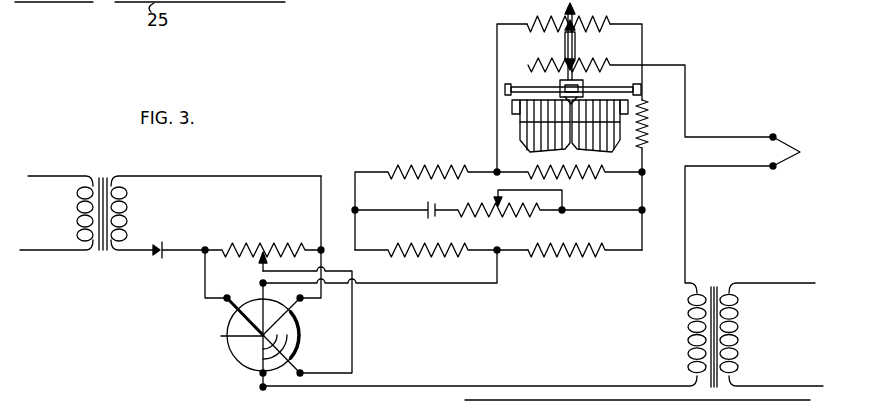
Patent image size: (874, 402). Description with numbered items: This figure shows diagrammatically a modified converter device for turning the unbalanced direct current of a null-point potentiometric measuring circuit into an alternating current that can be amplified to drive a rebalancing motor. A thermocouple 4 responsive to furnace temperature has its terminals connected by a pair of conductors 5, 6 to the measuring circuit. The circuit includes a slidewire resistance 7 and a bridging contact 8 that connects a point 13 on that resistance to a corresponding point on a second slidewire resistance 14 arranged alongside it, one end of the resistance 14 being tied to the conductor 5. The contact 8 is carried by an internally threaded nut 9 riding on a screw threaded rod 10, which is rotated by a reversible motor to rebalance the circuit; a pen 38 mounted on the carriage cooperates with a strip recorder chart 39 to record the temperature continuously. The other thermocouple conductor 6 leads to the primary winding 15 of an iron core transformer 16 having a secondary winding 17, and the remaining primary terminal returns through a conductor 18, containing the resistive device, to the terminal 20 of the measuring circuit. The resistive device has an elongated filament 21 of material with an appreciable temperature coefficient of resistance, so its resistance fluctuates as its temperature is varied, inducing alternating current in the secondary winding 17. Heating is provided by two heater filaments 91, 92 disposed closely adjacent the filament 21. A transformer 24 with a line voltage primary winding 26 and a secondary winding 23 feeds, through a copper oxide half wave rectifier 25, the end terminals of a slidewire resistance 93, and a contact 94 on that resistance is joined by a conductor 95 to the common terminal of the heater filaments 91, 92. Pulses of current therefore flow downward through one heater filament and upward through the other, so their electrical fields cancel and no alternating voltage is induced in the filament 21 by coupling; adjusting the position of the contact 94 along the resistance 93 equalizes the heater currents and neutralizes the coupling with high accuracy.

The thermocouple 4 is at (796, 128).
The conductor 5 is at (655, 66).
The conductor 6 is at (688, 221).
The slidewire resistance 7 is at (595, 20).
The contact 8 is at (564, 47).
The nut 9 is at (585, 86).
The screw threaded rod 10 is at (528, 87).
The point 13 is at (577, 24).
The slidewire resistance 14 is at (592, 66).
The primary winding 15 is at (688, 341).
The iron core transformer 16 is at (716, 285).
The secondary winding 17 is at (738, 341).
The conductor 18 is at (497, 386).
The terminal 20 is at (498, 250).
The filament 21 is at (292, 320).
The secondary winding 23 is at (128, 222).
The transformer 24 is at (100, 178).
The half wave rectifier 25 is at (159, 255).
The primary winding 26 is at (80, 222).
The pen 38 is at (572, 103).
The recorder chart 39 is at (600, 133).
The heater filament 91 is at (231, 340).
The heater filament 92 is at (290, 340).
The slidewire resistance 93 is at (258, 247).
The contact 94 is at (259, 264).
The conductor 95 is at (352, 328).